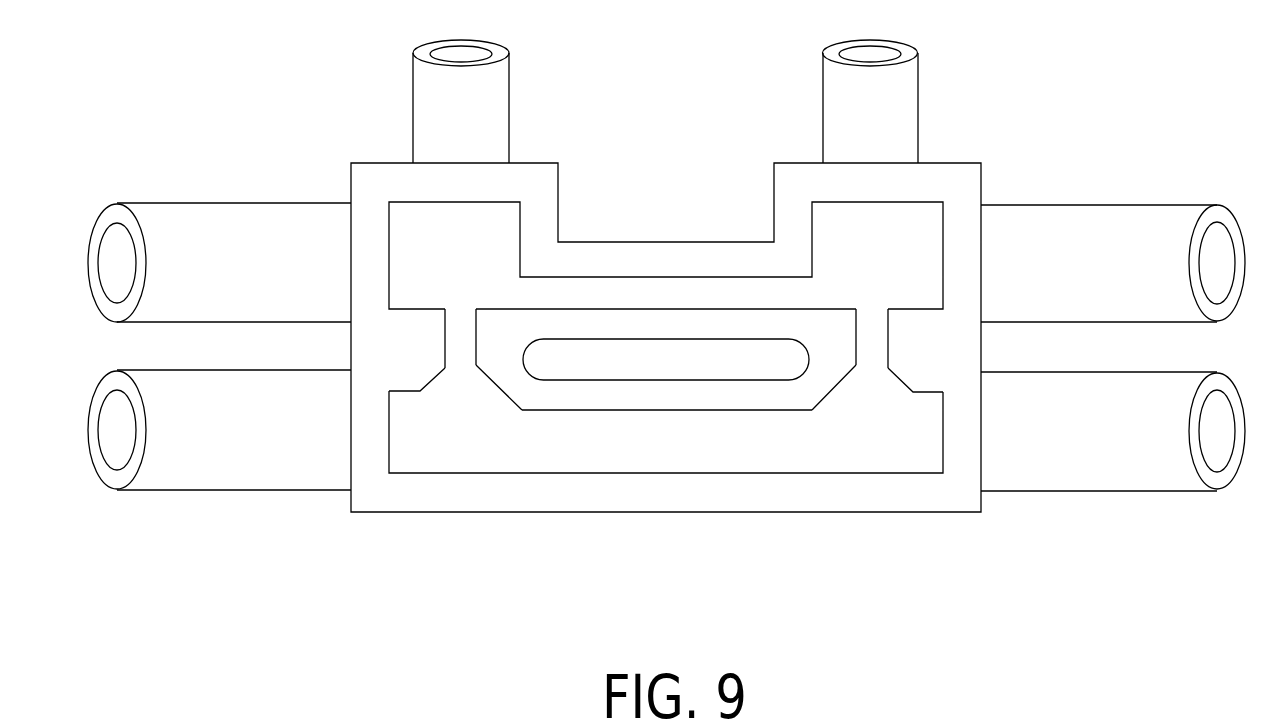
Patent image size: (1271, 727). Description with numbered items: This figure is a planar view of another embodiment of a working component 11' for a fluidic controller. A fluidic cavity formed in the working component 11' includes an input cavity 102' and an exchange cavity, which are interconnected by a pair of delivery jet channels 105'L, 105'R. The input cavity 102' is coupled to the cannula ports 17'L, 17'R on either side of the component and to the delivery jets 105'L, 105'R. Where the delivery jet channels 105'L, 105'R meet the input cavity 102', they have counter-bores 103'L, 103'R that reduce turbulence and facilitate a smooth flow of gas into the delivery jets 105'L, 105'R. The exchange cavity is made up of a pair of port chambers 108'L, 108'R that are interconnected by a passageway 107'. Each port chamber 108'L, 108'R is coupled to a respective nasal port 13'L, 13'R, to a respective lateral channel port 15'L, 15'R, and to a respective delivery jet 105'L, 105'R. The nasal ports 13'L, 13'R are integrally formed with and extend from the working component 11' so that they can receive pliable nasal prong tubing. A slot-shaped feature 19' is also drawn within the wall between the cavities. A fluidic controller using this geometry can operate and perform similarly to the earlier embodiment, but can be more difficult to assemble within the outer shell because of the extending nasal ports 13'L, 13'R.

The working component 11' is at (666, 375).
The nasal port 13'L is at (503, 90).
The nasal port 13'R is at (922, 84).
The lateral channel port 15'L is at (219, 262).
The lateral channel port 15'R is at (1113, 263).
The cannula port 17'L is at (219, 430).
The cannula port 17'R is at (1113, 431).
The slot 19' is at (666, 270).
The input cavity 102' is at (666, 501).
The counter-bore 103'L is at (462, 506).
The counter-bore 103'R is at (877, 527).
The delivery jet channel 105'L is at (412, 475).
The delivery jet channel 105'R is at (931, 451).
The passageway 107' is at (666, 192).
The port chamber 108'L is at (455, 200).
The port chamber 108'R is at (903, 210).